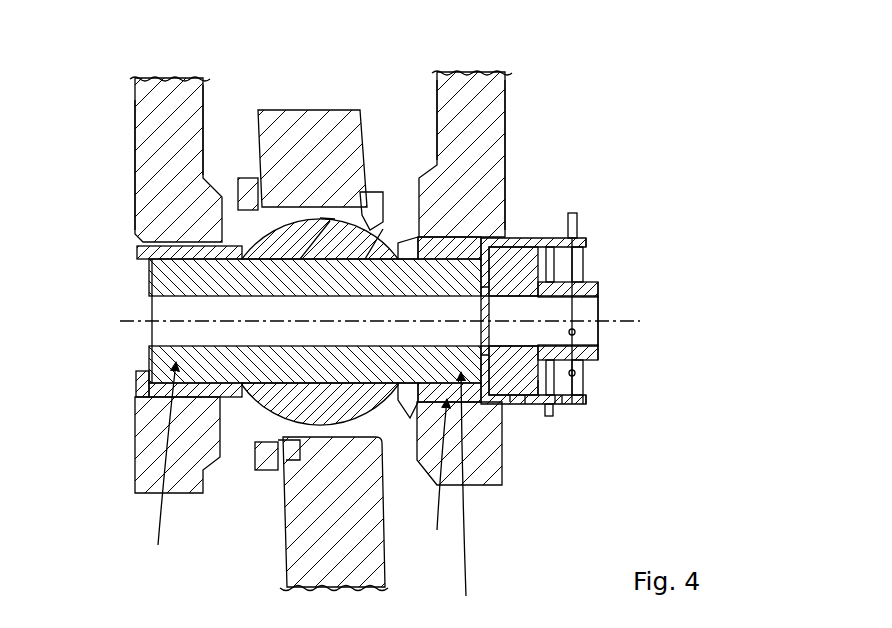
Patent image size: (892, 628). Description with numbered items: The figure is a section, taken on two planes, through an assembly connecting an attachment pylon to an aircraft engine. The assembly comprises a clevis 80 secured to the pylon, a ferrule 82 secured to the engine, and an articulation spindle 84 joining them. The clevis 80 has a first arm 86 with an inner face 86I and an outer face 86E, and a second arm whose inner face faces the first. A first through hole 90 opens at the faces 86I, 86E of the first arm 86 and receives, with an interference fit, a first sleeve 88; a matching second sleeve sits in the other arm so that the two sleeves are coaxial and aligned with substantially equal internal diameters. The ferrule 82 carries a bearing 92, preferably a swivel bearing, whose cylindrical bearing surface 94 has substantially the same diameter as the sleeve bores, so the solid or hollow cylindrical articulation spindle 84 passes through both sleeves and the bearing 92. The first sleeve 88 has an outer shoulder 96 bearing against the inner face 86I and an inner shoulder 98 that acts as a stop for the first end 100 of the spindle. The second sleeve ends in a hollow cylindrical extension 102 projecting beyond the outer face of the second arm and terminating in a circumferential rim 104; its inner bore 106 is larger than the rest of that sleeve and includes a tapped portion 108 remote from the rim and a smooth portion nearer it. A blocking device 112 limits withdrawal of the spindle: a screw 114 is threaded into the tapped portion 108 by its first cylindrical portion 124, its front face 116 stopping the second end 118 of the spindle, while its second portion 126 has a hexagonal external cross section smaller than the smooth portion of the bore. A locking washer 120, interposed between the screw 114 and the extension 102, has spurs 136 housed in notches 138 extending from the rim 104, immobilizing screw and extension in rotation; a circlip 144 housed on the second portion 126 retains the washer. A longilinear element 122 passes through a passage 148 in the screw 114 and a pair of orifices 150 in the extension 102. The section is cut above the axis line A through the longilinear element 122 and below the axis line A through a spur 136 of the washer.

The axis line A is at (130, 320).
The clevis 80 is at (534, 113).
The ferrule 82 is at (386, 553).
The articulation spindle 84 is at (252, 200).
The first arm 86 is at (166, 106).
The outer face 86E is at (137, 143).
The inner face 86I is at (206, 95).
The first sleeve 88 is at (145, 389).
The first through hole 90 is at (256, 273).
The bearing 92 is at (322, 200).
The cylindrical bearing surface 94 is at (348, 218).
The outer shoulder 96 is at (227, 417).
The inner shoulder 98 is at (152, 391).
The first end 100 is at (157, 470).
The extension 102 is at (565, 185).
The circumferential rim 104 is at (582, 398).
The inner bore 106 is at (528, 404).
The tapped portion 108 is at (517, 401).
The blocking device 112 is at (605, 257).
The screw 114 is at (594, 341).
The front face 116 is at (406, 236).
The second end 118 is at (470, 495).
The locking washer 120 is at (549, 419).
The longilinear element 122 is at (578, 220).
The first cylindrical portion 124 is at (522, 238).
The second portion 126 is at (592, 281).
The spur 136 is at (575, 405).
The notch 138 is at (571, 416).
The circlip 144 is at (597, 278).
The passage 148 is at (594, 300).
The orifices 150 is at (581, 250).